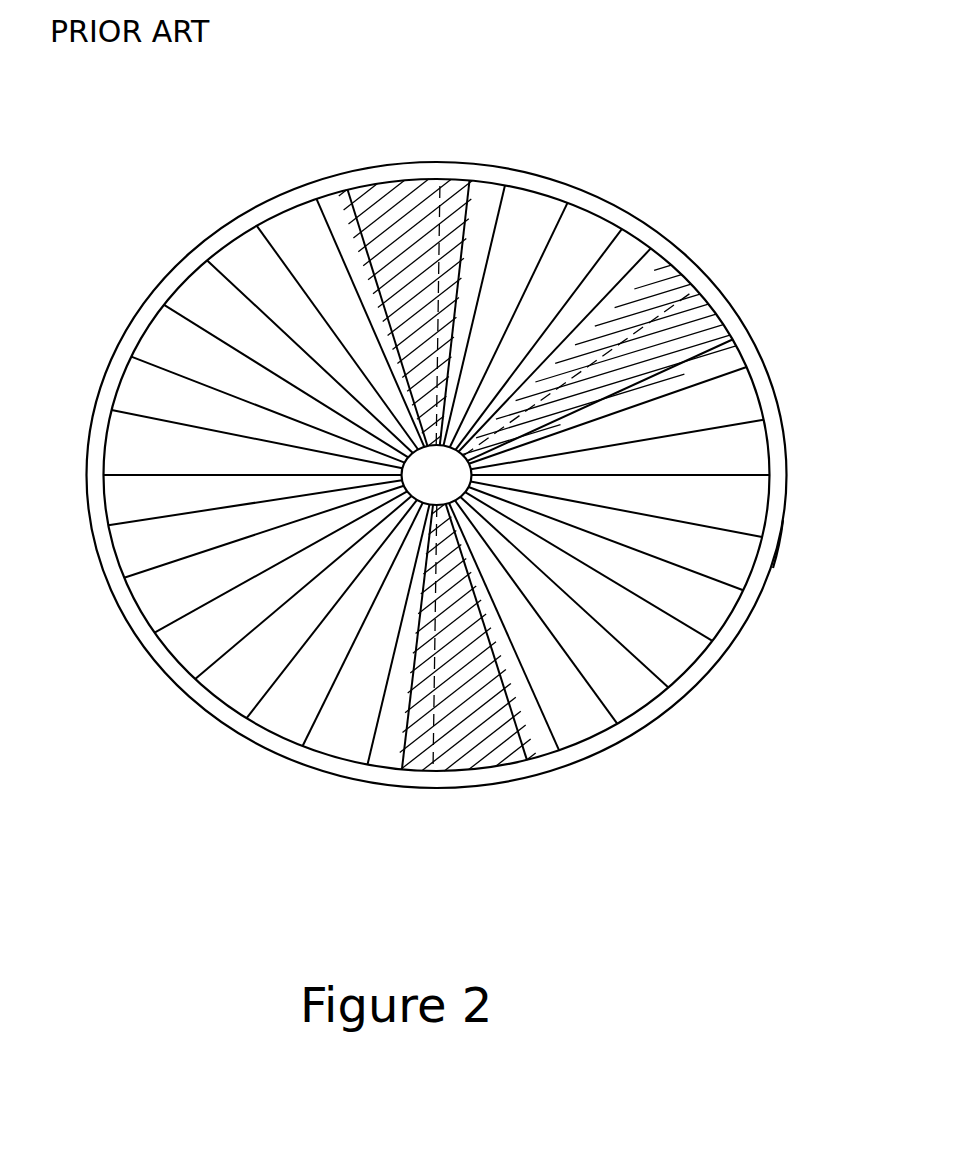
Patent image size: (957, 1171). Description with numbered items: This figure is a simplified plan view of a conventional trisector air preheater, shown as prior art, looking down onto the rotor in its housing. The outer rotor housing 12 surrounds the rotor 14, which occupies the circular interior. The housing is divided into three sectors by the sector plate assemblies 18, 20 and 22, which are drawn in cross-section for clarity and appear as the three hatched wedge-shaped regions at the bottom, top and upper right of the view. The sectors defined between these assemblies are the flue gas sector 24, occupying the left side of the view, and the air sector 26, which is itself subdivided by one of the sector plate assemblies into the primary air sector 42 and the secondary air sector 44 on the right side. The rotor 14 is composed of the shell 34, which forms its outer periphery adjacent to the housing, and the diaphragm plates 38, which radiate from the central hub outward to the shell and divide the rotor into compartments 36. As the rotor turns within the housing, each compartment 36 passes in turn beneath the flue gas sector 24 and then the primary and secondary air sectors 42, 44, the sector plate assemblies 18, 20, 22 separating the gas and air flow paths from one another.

The rotor housing 12 is at (85, 430).
The rotor 14 is at (732, 620).
The sector plate assembly 18 is at (473, 762).
The sector plate assembly 20 is at (393, 185).
The sector plate assembly 22 is at (678, 303).
The flue gas sector 24 is at (150, 392).
The air sector 26 is at (658, 112).
The shell 34 is at (760, 575).
The compartments 36 is at (737, 452).
The diaphragm plates 38 is at (150, 518).
The primary air sector 42 is at (588, 240).
The secondary air sector 44 is at (690, 660).